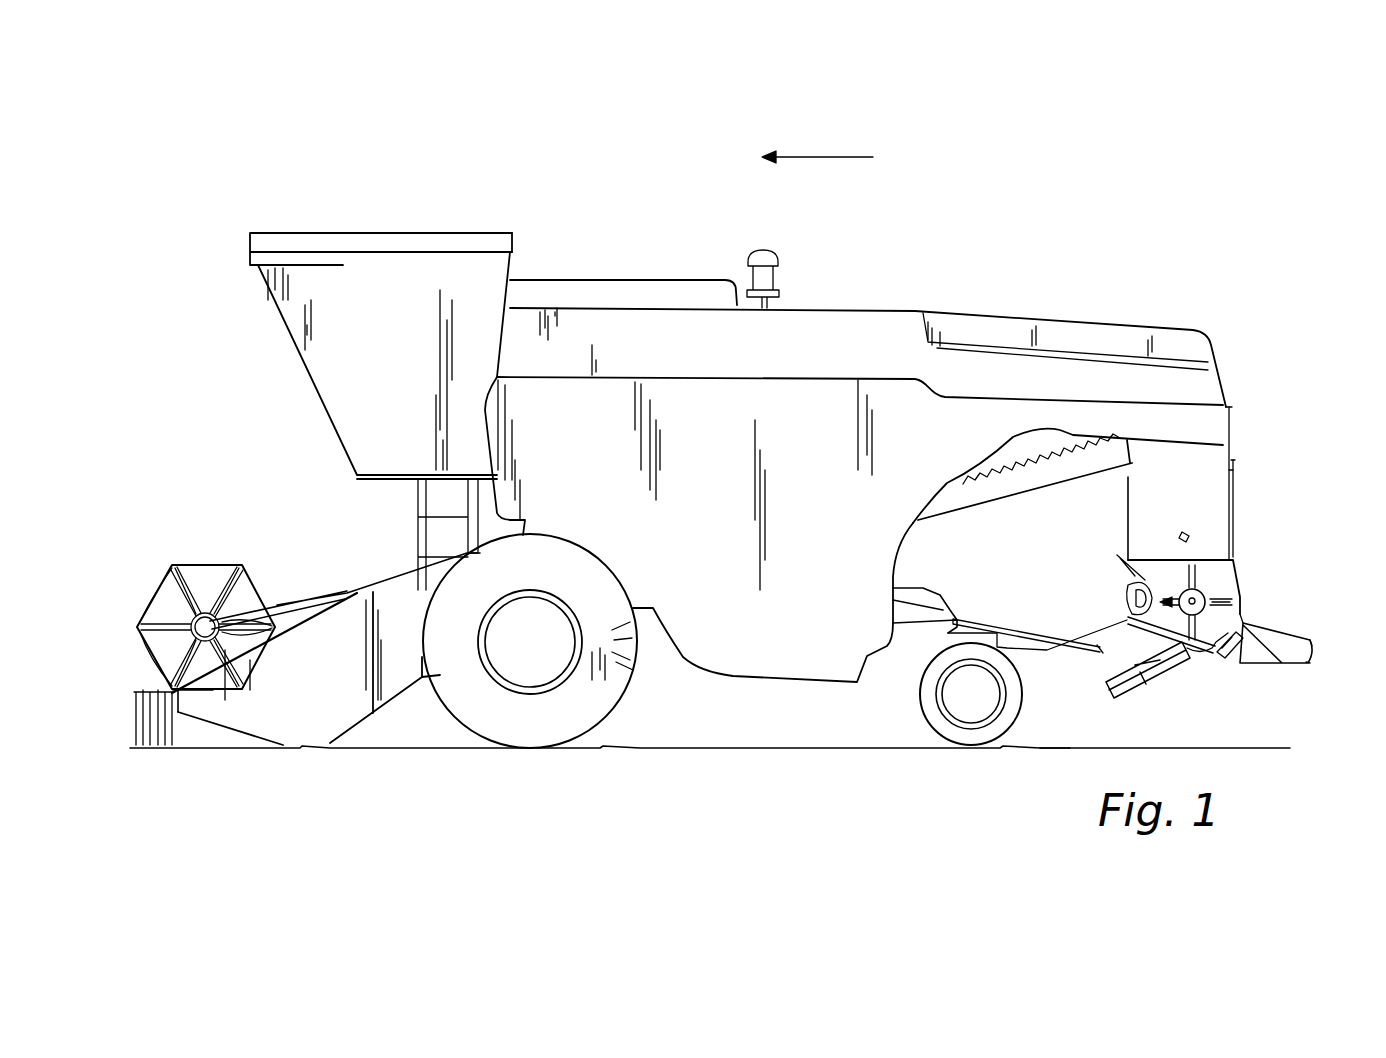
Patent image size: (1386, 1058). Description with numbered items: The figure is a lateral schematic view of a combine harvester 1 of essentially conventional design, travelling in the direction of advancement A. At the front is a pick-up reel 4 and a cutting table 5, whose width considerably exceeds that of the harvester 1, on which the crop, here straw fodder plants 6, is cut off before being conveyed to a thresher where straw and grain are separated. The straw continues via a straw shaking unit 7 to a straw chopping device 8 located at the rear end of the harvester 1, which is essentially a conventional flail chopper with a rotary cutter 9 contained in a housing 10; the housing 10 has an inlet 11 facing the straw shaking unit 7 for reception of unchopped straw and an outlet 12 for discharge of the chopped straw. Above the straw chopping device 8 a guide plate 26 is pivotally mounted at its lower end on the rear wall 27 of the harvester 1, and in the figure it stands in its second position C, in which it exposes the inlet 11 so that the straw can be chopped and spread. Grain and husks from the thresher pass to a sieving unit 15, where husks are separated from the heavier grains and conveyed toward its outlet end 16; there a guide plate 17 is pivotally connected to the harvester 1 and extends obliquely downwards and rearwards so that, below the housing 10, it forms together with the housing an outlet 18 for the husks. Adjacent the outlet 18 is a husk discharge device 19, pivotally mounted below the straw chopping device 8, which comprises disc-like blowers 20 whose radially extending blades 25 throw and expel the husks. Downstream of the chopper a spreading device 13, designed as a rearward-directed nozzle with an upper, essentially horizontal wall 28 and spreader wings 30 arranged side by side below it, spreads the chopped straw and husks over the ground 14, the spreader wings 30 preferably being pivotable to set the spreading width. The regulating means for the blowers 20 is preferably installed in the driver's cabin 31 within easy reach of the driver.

The combine harvester 1 is at (436, 215).
The pick-up reel 4 is at (215, 553).
The cutting table 5 is at (328, 672).
The straw fodder plants 6 is at (135, 712).
The straw shaking unit 7 is at (963, 502).
The straw chopping device 8 is at (1237, 572).
The rotary cutter 9 is at (1240, 593).
The housing 10 is at (1243, 606).
The inlet 11 is at (1170, 558).
The outlet 12 is at (1222, 657).
The spreading device 13 is at (1296, 633).
The ground 14 is at (1053, 745).
The sieving unit 15 is at (907, 610).
The outlet end 16 is at (945, 612).
The guide plate 17 is at (1011, 630).
The outlet 18 is at (1100, 632).
The husk discharge device 19 is at (1146, 671).
The blower 20 is at (1172, 657).
The blades 25 is at (1127, 622).
The guide plate 26 is at (1233, 487).
The rear wall 27 is at (1233, 413).
The upper wall 28 is at (1314, 640).
The spreader wings 30 is at (1312, 667).
The driver's cabin 31 is at (360, 367).
The direction of advancement A is at (817, 140).
The second position C is at (1229, 514).